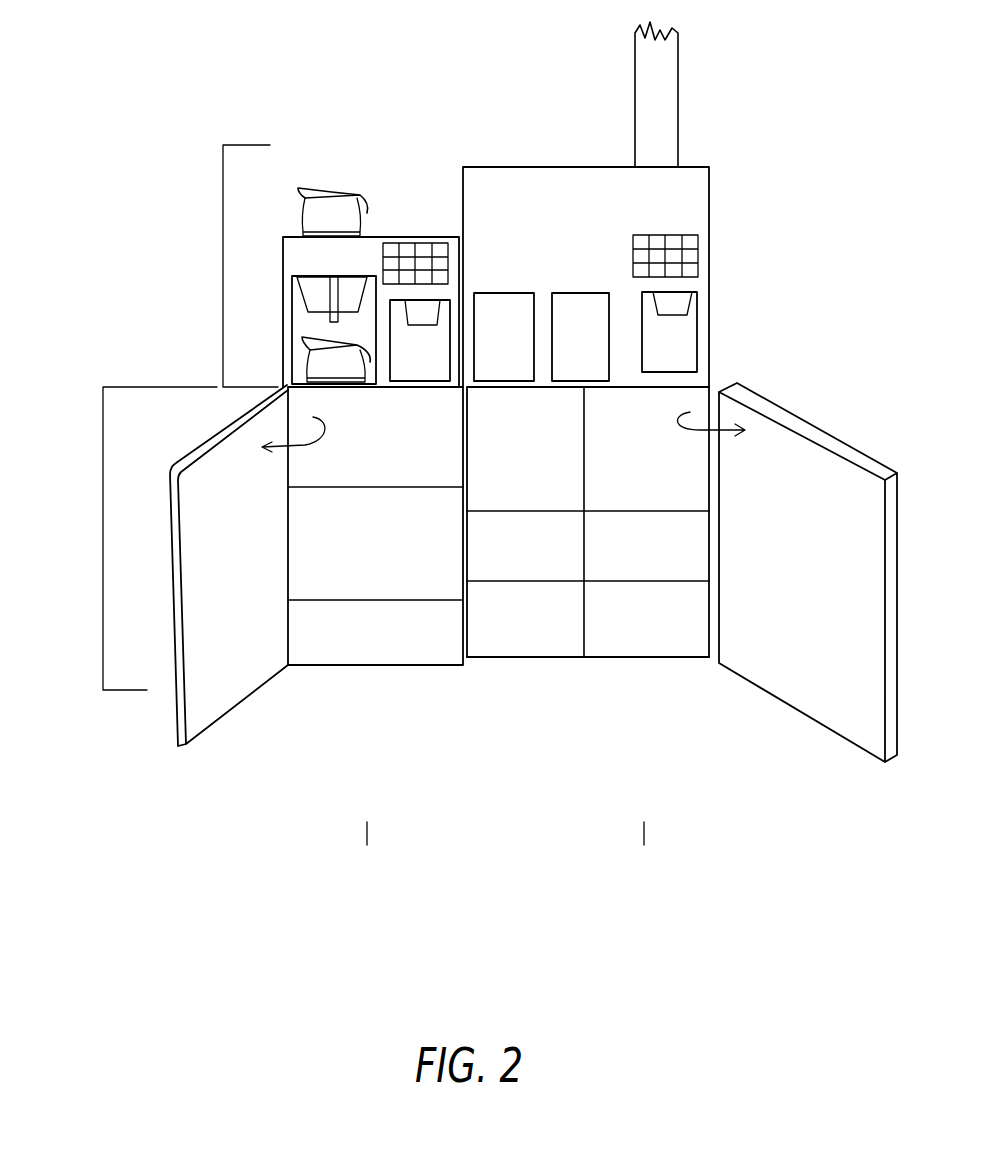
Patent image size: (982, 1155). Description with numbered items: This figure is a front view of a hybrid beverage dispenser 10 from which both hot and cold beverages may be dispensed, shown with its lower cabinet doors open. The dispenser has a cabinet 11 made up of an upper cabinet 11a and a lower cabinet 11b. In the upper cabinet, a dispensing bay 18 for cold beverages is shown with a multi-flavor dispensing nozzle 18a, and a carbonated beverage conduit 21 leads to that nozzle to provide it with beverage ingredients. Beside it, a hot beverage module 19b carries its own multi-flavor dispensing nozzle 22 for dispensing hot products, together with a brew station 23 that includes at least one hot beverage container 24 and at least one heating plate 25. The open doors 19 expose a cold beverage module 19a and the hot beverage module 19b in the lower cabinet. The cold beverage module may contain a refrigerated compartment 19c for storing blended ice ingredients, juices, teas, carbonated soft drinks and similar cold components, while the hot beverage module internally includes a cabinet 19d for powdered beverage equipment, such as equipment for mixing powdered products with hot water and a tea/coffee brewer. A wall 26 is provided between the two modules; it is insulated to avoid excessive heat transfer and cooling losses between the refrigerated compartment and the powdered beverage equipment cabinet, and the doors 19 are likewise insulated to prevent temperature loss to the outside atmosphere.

The hybrid beverage dispenser 10 is at (168, 313).
The cabinet 11 is at (710, 222).
The upper cabinet 11a is at (223, 227).
The lower cabinet 11b is at (103, 538).
The dispensing bay 18 is at (687, 343).
The multi-flavor dispensing nozzle 18a is at (683, 300).
The doors 19 is at (218, 727).
The cold beverage module 19a is at (698, 797).
The hot beverage module 19b is at (408, 800).
The refrigerated compartment 19c is at (683, 625).
The cabinet for powdered beverage equipment 19d is at (337, 642).
The carbonated beverage conduit 21 is at (638, 90).
The multi-flavor dispensing nozzle 22 is at (438, 302).
The brew station 23 is at (310, 302).
The hot beverage container 24 is at (340, 210).
The heating plate 25 is at (300, 235).
The wall 26 is at (463, 638).